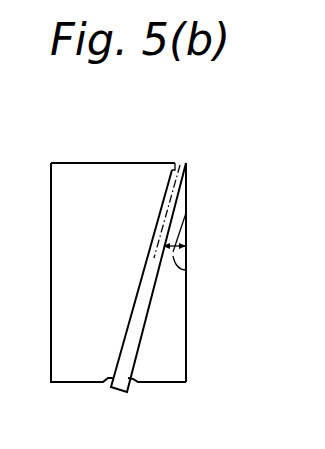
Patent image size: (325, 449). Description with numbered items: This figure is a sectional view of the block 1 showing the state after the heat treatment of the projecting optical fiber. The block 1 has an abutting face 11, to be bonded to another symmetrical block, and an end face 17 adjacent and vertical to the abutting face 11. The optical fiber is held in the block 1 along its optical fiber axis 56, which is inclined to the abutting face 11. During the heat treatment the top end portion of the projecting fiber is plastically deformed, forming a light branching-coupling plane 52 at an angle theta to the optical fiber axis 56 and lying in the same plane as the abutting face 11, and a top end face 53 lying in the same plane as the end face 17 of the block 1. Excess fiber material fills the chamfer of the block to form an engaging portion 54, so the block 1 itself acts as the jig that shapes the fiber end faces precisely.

The block 1 is at (112, 160).
The abutting face 11 is at (187, 312).
The end face 17 is at (68, 163).
The light branching-coupling plane 52 is at (187, 181).
The top end face 53 is at (187, 163).
The engaging portion 54 is at (175, 166).
The optical fiber axis 56 is at (163, 229).